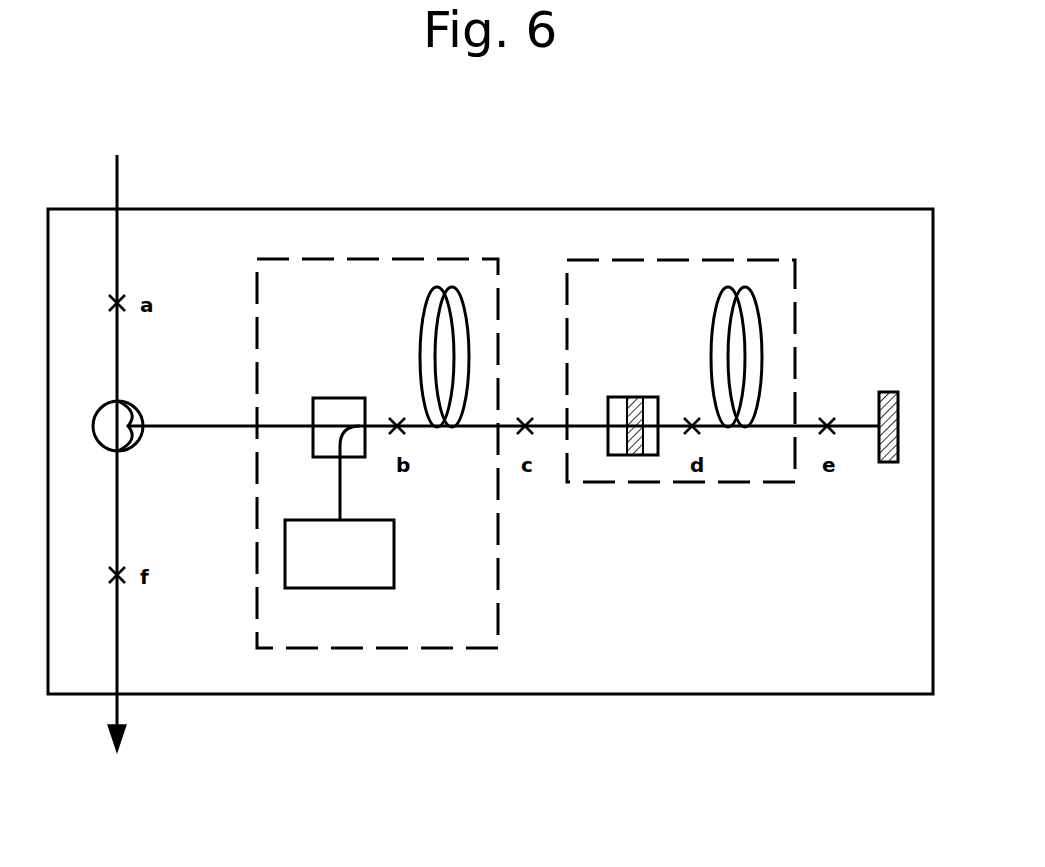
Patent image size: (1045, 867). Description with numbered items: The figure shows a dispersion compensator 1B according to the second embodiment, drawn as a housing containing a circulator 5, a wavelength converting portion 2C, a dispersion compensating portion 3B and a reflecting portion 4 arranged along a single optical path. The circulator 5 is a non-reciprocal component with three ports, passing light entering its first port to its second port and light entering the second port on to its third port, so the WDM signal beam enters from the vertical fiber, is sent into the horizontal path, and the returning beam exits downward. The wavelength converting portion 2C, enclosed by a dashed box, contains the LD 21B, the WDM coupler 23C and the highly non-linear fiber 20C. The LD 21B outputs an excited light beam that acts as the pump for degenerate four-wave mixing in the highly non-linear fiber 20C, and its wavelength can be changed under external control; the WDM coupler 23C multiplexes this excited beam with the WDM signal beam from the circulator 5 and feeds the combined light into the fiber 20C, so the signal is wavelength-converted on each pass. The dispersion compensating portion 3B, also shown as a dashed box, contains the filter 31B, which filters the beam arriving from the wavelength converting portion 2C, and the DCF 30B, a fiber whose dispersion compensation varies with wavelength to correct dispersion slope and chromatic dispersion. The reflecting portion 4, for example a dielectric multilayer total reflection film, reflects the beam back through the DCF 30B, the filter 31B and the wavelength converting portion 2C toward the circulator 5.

The dispersion compensator 1B is at (746, 209).
The circulator 5 is at (128, 450).
The wavelength converting portion 2C is at (498, 560).
The WDM coupler 23C is at (345, 398).
The LD 21B is at (394, 560).
The highly non-linear fiber 20C is at (420, 358).
The dispersion compensating portion 3B is at (653, 482).
The filter 31B is at (642, 397).
The DCF 30B is at (712, 358).
The reflecting portion 4 is at (880, 442).